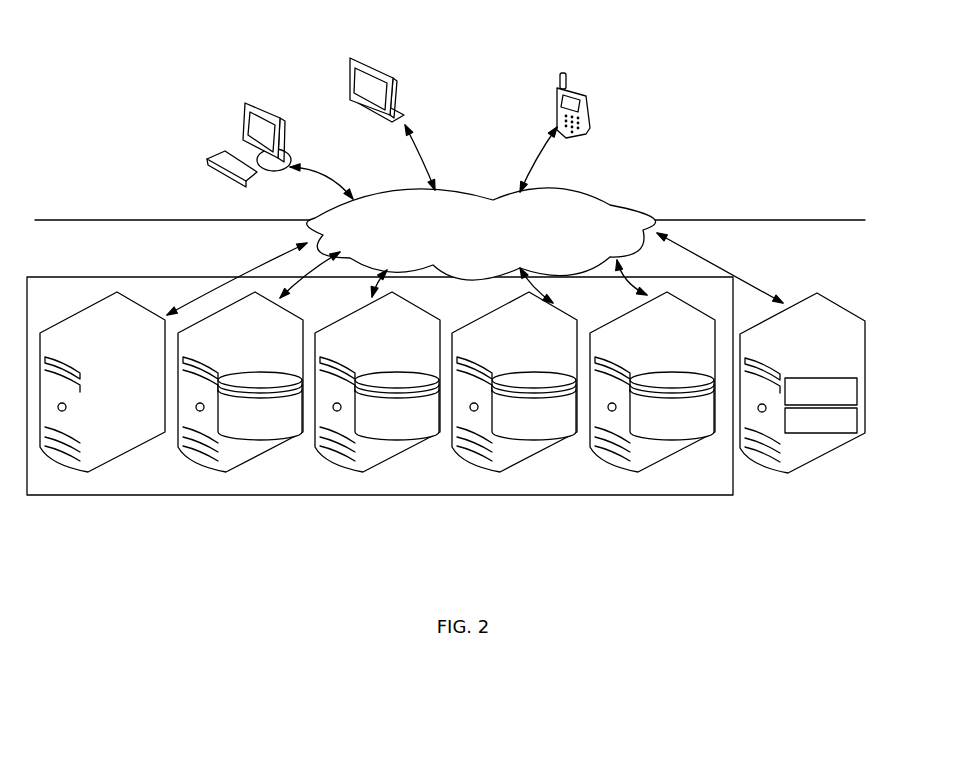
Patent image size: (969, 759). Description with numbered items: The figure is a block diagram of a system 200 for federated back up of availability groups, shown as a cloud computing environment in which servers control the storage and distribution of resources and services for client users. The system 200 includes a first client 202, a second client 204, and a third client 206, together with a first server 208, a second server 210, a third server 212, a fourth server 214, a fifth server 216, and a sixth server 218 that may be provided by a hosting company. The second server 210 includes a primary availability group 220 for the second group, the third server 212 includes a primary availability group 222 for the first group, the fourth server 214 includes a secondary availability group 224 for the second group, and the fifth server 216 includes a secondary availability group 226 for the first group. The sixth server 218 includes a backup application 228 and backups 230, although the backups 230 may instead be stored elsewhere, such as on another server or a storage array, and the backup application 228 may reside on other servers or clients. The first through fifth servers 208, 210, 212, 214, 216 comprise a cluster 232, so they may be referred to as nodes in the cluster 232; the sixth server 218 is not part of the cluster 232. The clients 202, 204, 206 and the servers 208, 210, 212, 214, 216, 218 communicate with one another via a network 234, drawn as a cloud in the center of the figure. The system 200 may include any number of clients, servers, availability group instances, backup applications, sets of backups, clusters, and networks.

The system 200 is at (458, 72).
The first client 202 is at (248, 103).
The second client 204 is at (353, 60).
The third client 206 is at (560, 80).
The first server 208 is at (112, 293).
The second server 210 is at (268, 298).
The third server 212 is at (357, 311).
The fourth server 214 is at (497, 311).
The fifth server 216 is at (620, 313).
The sixth server 218 is at (815, 293).
The primary availability group 2 220 is at (293, 425).
The primary availability group 1 222 is at (430, 425).
The secondary availability group 2 224 is at (567, 425).
The secondary availability group 1 226 is at (705, 425).
The backup application 228 is at (821, 391).
The backups 230 is at (821, 420).
The cluster 232 is at (718, 483).
The network 234 is at (481, 234).